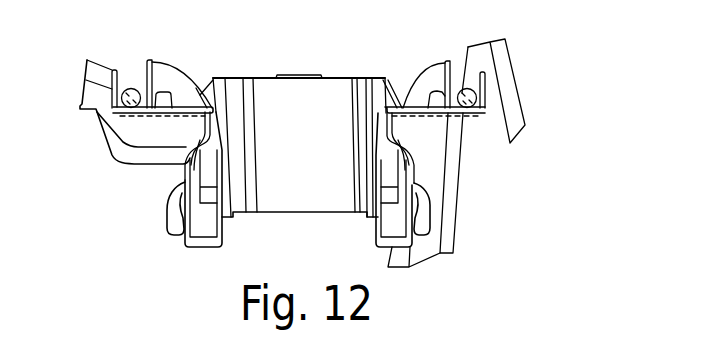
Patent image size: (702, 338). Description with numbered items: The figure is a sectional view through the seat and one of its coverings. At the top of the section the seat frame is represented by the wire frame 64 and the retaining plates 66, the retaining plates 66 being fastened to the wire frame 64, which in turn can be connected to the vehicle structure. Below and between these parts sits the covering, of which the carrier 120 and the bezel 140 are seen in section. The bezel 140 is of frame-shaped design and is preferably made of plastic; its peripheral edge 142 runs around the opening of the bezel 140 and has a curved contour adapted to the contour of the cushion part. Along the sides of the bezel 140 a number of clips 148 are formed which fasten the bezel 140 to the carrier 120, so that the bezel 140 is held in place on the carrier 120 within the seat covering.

The bezel 140 is at (325, 115).
The clips 148 is at (243, 108).
The wire frame 64 is at (122, 135).
The retaining plates 66 is at (440, 68).
The peripheral edge 142 is at (203, 240).
The carrier 120 is at (407, 146).